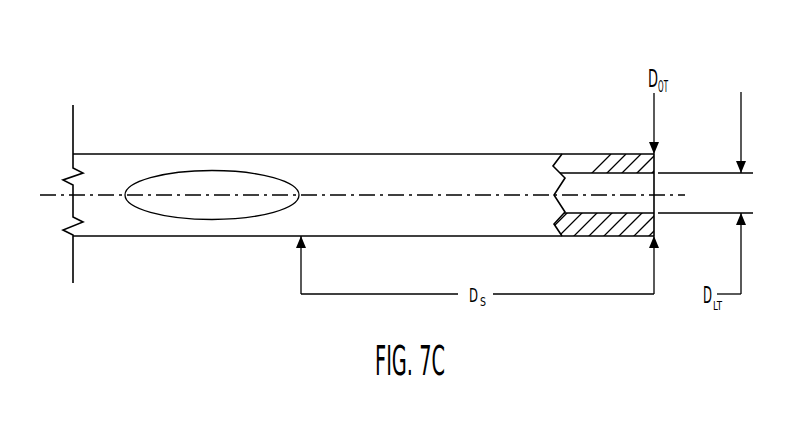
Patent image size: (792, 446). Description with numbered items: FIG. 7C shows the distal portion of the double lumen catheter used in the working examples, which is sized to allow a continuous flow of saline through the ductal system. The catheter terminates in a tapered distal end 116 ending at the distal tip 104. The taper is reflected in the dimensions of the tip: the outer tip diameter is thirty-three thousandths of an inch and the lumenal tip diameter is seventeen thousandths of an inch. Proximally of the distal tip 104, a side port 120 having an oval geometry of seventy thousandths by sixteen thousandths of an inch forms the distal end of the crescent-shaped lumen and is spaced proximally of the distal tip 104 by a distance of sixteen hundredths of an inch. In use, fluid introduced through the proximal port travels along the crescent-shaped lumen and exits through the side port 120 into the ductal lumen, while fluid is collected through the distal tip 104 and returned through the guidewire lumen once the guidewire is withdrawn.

The distal tip 104 is at (614, 105).
The tapered distal end 116 is at (313, 153).
The side port 120 is at (210, 221).